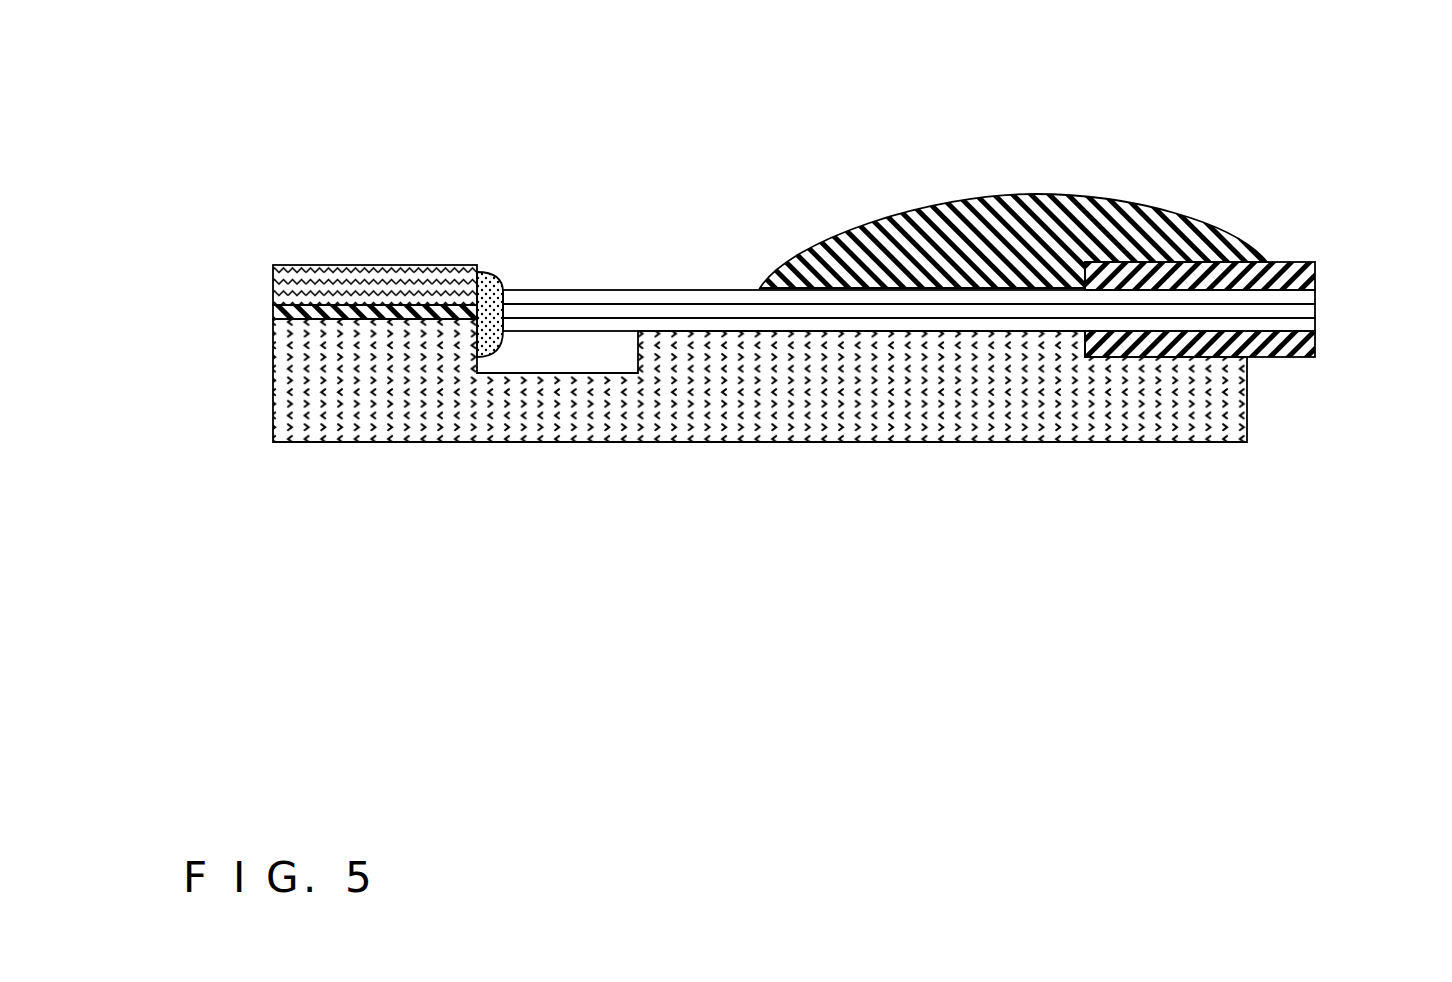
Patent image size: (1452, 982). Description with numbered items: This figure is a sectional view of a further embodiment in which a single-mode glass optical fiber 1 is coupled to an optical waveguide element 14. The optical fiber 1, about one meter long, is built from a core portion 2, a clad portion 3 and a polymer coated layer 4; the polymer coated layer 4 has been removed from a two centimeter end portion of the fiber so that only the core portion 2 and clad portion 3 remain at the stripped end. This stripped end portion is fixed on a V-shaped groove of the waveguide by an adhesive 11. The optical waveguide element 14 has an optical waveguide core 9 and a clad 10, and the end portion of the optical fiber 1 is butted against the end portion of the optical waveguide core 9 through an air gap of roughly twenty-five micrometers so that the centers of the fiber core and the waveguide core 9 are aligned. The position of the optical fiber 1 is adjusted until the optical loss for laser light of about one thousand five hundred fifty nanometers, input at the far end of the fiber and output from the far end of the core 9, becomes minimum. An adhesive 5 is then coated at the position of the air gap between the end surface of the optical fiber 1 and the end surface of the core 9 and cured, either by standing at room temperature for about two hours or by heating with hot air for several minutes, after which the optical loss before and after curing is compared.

The single-mode glass optical fiber 1 is at (961, 307).
The core portion 2 is at (1315, 308).
The clad portion 3 is at (1315, 296).
The polymer coated layer 4 is at (1291, 262).
The adhesive 5 is at (487, 272).
The optical waveguide core 9 is at (273, 316).
The clad 10 is at (340, 265).
The adhesive 11 is at (938, 207).
The optical waveguide element 14 is at (243, 386).